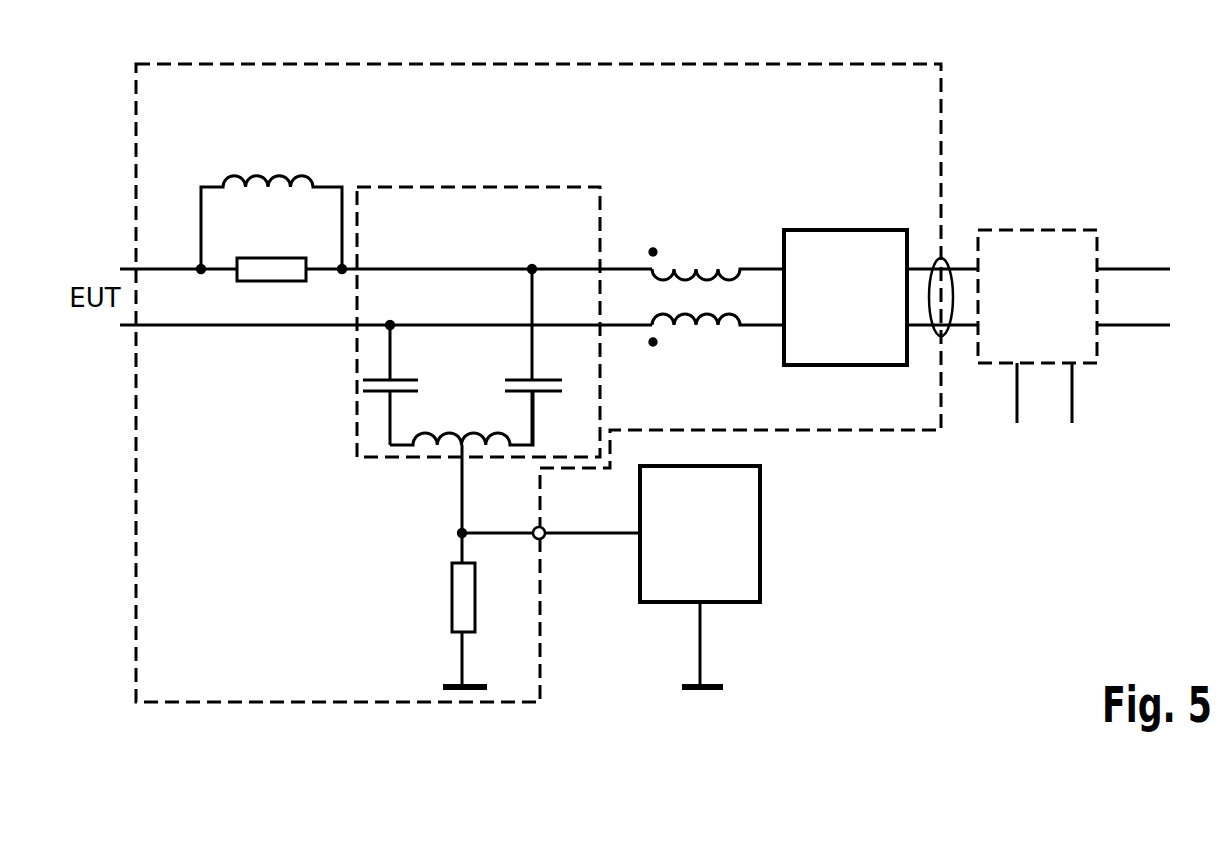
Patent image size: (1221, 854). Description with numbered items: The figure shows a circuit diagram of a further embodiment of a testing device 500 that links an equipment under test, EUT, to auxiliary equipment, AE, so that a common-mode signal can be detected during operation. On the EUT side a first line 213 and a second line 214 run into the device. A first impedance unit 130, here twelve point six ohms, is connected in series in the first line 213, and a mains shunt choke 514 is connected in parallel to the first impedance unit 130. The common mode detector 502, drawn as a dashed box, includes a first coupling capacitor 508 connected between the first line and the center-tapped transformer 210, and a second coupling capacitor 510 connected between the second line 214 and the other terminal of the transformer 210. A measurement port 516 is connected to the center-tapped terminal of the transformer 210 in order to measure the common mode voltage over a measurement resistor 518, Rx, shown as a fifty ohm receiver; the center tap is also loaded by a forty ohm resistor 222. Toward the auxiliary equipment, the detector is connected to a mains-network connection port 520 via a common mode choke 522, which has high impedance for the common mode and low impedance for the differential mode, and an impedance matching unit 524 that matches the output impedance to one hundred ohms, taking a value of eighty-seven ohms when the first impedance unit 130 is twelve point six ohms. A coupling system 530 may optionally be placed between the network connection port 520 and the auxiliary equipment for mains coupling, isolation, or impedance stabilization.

The testing device 500 is at (941, 100).
The first line 213 is at (180, 268).
The second line 214 is at (165, 330).
The first impedance unit 130 is at (255, 282).
The mains shunt choke 514 is at (330, 185).
The common mode detector 502 is at (517, 187).
The first coupling capacitor 508 is at (517, 378).
The second coupling capacitor 510 is at (372, 400).
The transformer 210 is at (435, 437).
The terminating resistor Z3 40 Ohm 222 is at (448, 618).
The measurement port 516 is at (542, 542).
The measurement resistor 518 is at (760, 523).
The common mode choke 522 is at (710, 320).
The impedance matching unit 524 is at (846, 230).
The mains-network connection port 520 is at (944, 258).
The coupling system 530 is at (1055, 230).